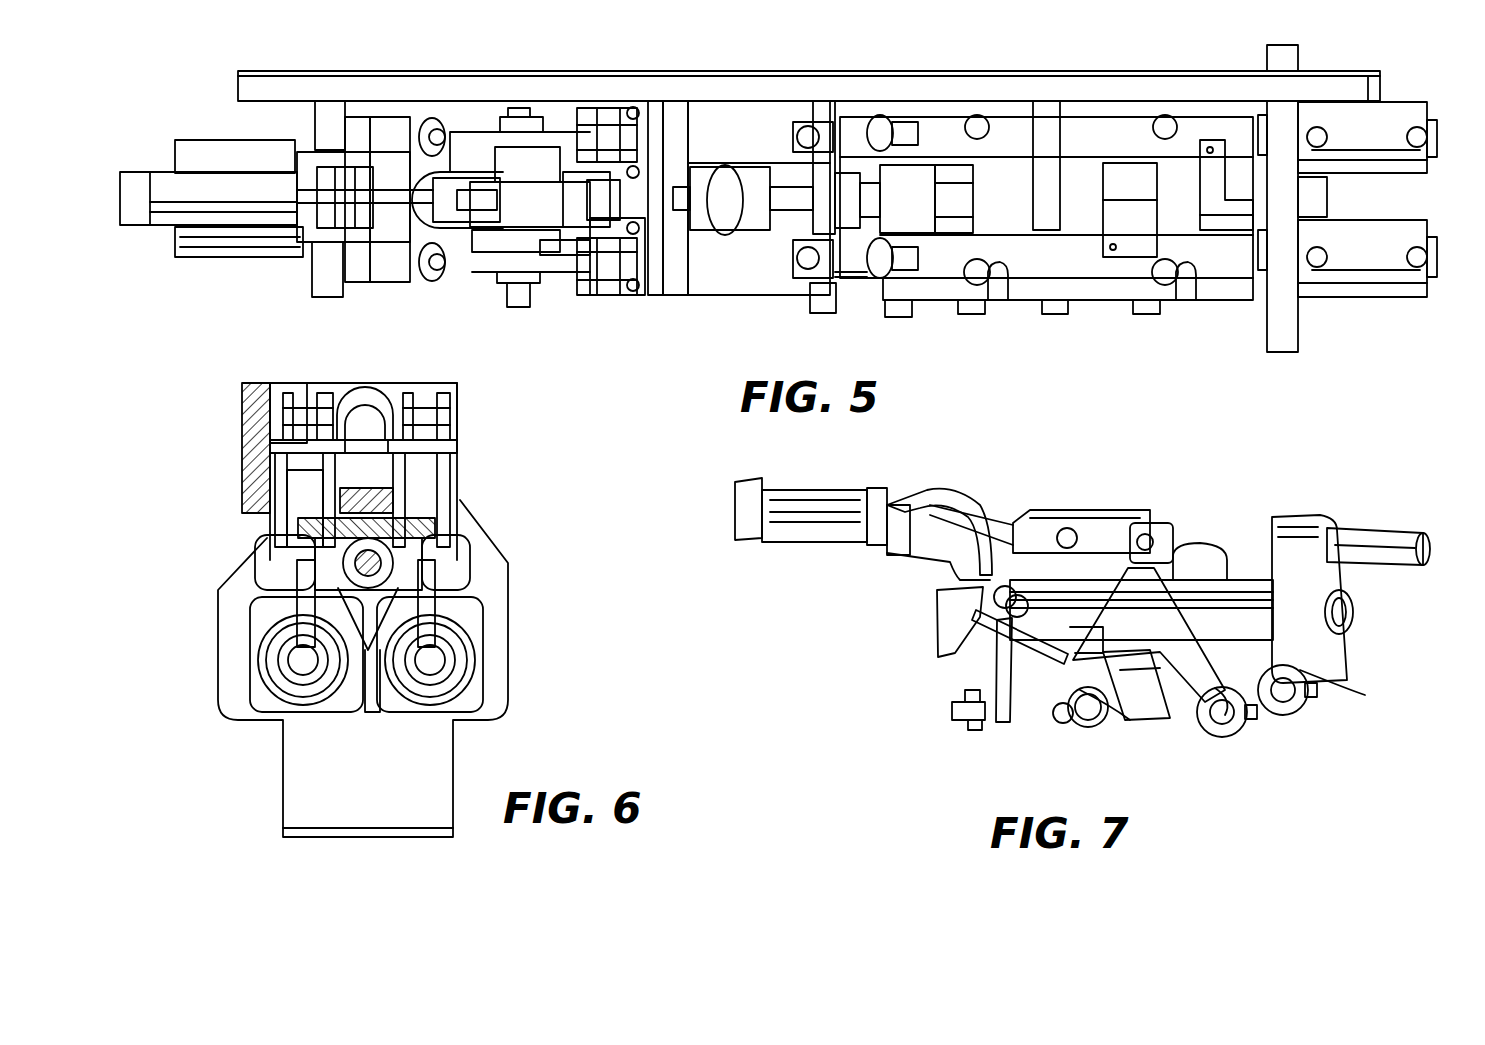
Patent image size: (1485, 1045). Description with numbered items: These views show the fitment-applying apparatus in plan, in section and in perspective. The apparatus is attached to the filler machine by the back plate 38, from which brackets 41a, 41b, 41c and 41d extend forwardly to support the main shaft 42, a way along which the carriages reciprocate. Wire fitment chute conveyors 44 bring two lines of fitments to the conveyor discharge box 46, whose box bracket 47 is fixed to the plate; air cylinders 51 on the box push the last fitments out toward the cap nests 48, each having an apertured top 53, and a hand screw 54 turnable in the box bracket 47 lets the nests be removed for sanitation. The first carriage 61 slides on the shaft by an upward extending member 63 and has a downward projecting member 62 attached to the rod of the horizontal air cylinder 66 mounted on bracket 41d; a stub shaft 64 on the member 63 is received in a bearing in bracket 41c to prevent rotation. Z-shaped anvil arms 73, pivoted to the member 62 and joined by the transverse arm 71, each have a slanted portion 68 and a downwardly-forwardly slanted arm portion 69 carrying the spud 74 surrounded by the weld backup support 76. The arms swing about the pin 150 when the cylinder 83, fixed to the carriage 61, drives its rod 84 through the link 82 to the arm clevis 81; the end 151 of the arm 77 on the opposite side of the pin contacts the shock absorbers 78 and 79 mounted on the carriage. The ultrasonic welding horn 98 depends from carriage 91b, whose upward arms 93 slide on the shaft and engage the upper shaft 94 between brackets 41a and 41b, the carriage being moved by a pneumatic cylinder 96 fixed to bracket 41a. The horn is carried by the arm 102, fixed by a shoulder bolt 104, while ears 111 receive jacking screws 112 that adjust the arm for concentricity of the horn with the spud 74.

In FIG. 5, the back plate 38 is at (1092, 84).
In FIG. 6, the back plate 38 is at (258, 395).
In FIG. 5, the bracket 41a is at (1280, 120).
In FIG. 5, the bracket 41b is at (1047, 120).
In FIG. 5, the bracket 41c is at (822, 125).
In FIG. 6, the bracket 41c is at (287, 400).
In FIG. 5, the bracket 41d is at (328, 120).
In FIG. 5, the main shaft 42 is at (965, 190).
In FIG. 6, the main shaft 42 is at (440, 562).
In FIG. 5, the wire fitment chute conveyors 44 is at (582, 120).
In FIG. 6, the wire fitment chute conveyors 44 is at (318, 405).
In FIG. 5, the conveyor discharge box 46 is at (700, 140).
In FIG. 6, the conveyor discharge box 46 is at (455, 400).
In FIG. 5, the box bracket 47 is at (740, 250).
In FIG. 6, the cap nest 48 is at (280, 477).
In FIG. 5, the air cylinder 51 is at (858, 125).
In FIG. 5, the apertured top 53 is at (650, 260).
In FIG. 5, the hand screw 54 is at (740, 188).
In FIG. 6, the hand screw 54 is at (372, 400).
In FIG. 5, the first carriage 61 is at (520, 180).
In FIG. 6, the first carriage 61 is at (372, 712).
In FIG. 7, the first carriage 61 is at (1265, 628).
In FIG. 7, the downward projecting member 62 is at (1130, 720).
In FIG. 5, the upward extending member 63 is at (655, 150).
In FIG. 7, the upward extending member 63 is at (1350, 585).
In FIG. 7, the stub shaft 64 is at (1355, 535).
In FIG. 5, the horizontal air cylinder 66 is at (190, 152).
In FIG. 7, the slanted portion 68 is at (1130, 681).
In FIG. 7, the arm portion 69 is at (1185, 690).
In FIG. 5, the transverse arm 71 is at (578, 140).
In FIG. 6, the transverse arm 71 is at (300, 525).
In FIG. 7, the transverse arm 71 is at (1195, 540).
In FIG. 6, the anvil arm 73 is at (300, 653).
In FIG. 7, the anvil arm 73 is at (1235, 560).
In FIG. 7, the spud 74 is at (1262, 720).
In FIG. 7, the weld backup support 76 is at (1240, 728).
In FIG. 5, the arm 77 is at (490, 280).
In FIG. 7, the arm 77 is at (1005, 722).
In FIG. 5, the shock absorber 78 is at (462, 262).
In FIG. 7, the shock absorber 78 is at (950, 575).
In FIG. 7, the shock absorber 79 is at (965, 730).
In FIG. 6, the arm clevis 81 is at (390, 520).
In FIG. 7, the arm clevis 81 is at (1165, 530).
In FIG. 5, the link 82 is at (505, 185).
In FIG. 6, the link 82 is at (370, 490).
In FIG. 7, the link 82 is at (1093, 525).
In FIG. 5, the cylinder 83 is at (230, 185).
In FIG. 7, the cylinder 83 is at (848, 495).
In FIG. 7, the rod 84 is at (1000, 520).
In FIG. 5, the carriage 91b is at (1130, 128).
In FIG. 5, the upward arm 93 is at (1238, 195).
In FIG. 5, the upper shaft 94 is at (1080, 203).
In FIG. 5, the pneumatic cylinder 96 is at (1400, 155).
In FIG. 6, the ultrasonic welding horn 98 is at (295, 645).
In FIG. 5, the arm 102 is at (1020, 292).
In FIG. 5, the shoulder bolt 104 is at (900, 317).
In FIG. 5, the ear 111 is at (978, 282).
In FIG. 5, the jacking screw 112 is at (996, 300).
In FIG. 5, the pin 150 is at (552, 270).
In FIG. 7, the pin 150 is at (1065, 722).
In FIG. 7, the end of arm 151 is at (1000, 640).